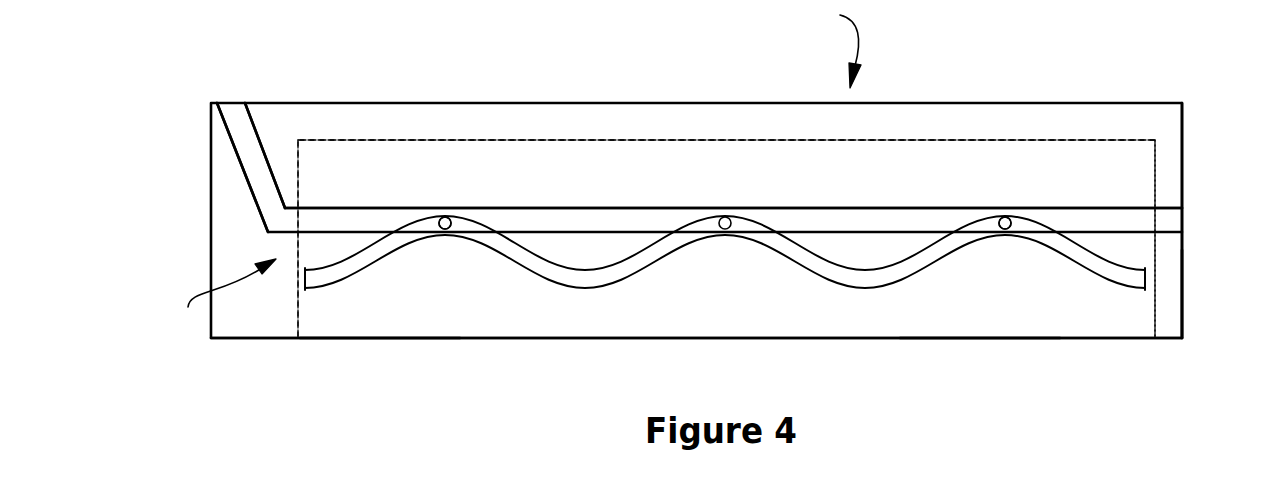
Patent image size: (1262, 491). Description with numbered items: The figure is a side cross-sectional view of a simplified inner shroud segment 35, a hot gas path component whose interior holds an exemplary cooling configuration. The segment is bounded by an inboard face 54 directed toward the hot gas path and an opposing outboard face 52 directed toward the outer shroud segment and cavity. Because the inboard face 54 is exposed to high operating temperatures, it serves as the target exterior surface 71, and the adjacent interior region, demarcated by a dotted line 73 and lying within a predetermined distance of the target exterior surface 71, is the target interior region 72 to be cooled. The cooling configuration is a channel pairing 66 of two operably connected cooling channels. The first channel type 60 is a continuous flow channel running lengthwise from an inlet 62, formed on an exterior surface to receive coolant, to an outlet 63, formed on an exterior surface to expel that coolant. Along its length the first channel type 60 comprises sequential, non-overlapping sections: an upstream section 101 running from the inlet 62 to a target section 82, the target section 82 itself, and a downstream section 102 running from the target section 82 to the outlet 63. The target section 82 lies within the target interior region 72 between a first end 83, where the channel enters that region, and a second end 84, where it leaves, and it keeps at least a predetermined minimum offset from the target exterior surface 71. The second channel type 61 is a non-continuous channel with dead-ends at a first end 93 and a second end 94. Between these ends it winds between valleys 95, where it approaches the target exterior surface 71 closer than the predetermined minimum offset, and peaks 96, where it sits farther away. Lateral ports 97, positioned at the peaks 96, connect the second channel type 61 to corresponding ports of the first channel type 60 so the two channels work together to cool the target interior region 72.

The inner shroud segment 35 is at (838, 47).
The outboard face 52 is at (552, 103).
The inboard face 54 is at (742, 338).
The first channel type 60 is at (565, 222).
The second channel type 61 is at (500, 243).
The inlet 62 is at (238, 103).
The outlet 63 is at (1167, 223).
The channel pairing 66 is at (226, 297).
The target exterior surface 71 is at (380, 338).
The target interior region 72 is at (432, 176).
The dotted line 73 is at (723, 138).
The target section 82 is at (365, 224).
The first end 83 is at (310, 200).
The second end 84 is at (1148, 232).
The first end 93 is at (303, 282).
The second end 94 is at (1145, 285).
The valleys 95 is at (587, 290).
The peaks 96 is at (457, 215).
The lateral ports 97 is at (448, 230).
The upstream section 101 is at (257, 163).
The downstream section 102 is at (1170, 290).